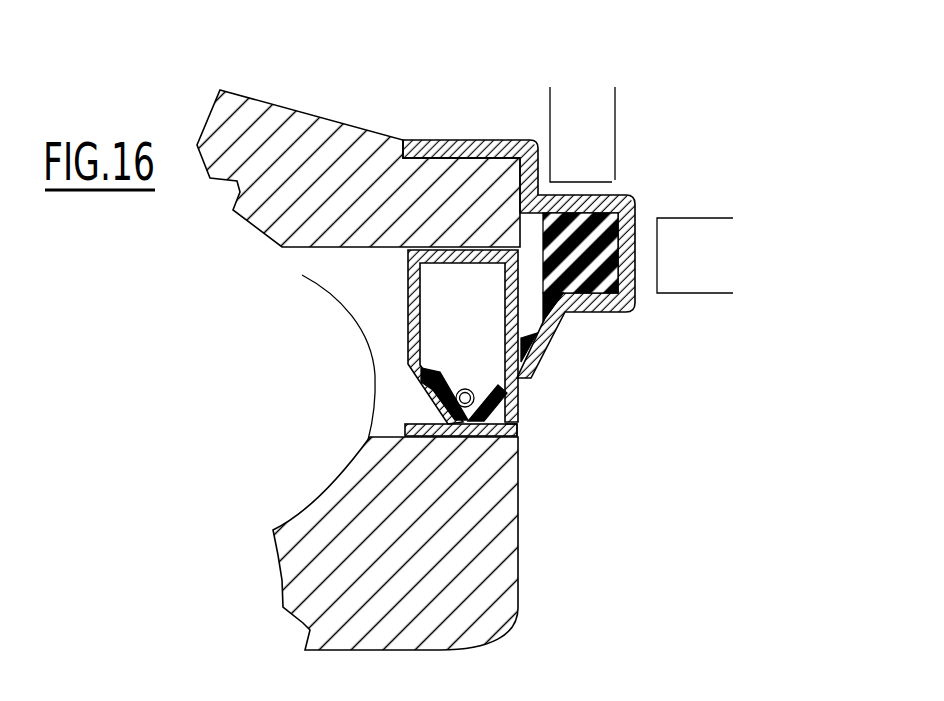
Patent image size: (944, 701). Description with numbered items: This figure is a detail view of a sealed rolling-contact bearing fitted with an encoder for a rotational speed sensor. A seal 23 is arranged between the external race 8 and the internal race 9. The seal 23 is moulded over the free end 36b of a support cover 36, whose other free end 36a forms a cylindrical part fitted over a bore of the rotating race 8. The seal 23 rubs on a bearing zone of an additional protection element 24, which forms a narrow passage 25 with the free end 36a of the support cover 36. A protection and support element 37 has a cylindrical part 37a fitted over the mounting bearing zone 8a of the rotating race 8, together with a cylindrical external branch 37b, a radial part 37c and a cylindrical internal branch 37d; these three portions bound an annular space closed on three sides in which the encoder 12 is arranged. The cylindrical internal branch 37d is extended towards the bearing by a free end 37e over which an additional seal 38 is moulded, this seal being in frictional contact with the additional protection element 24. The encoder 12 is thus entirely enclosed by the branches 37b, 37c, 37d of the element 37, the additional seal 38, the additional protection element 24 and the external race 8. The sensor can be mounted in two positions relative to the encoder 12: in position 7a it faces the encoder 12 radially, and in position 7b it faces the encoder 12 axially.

The sensor position 7a is at (593, 120).
The sensor position 7b is at (682, 233).
The external race 8 is at (270, 143).
The mounting bearing zone 8a is at (438, 158).
The internal race 9 is at (482, 527).
The encoder 12 is at (628, 270).
The seal 23 is at (515, 423).
The additional protection element 24 is at (445, 432).
The narrow passage 25 is at (550, 313).
The support cover 36 is at (412, 300).
The free end of support cover 36a is at (467, 252).
The free end of support cover 36b is at (415, 388).
The protection and support element 37 is at (529, 146).
The cylindrical part 37a is at (428, 146).
The cylindrical external branch 37b is at (583, 200).
The radial part 37c is at (630, 232).
The cylindrical internal branch 37d is at (597, 305).
The free end 37e is at (550, 335).
The additional seal 38 is at (533, 360).